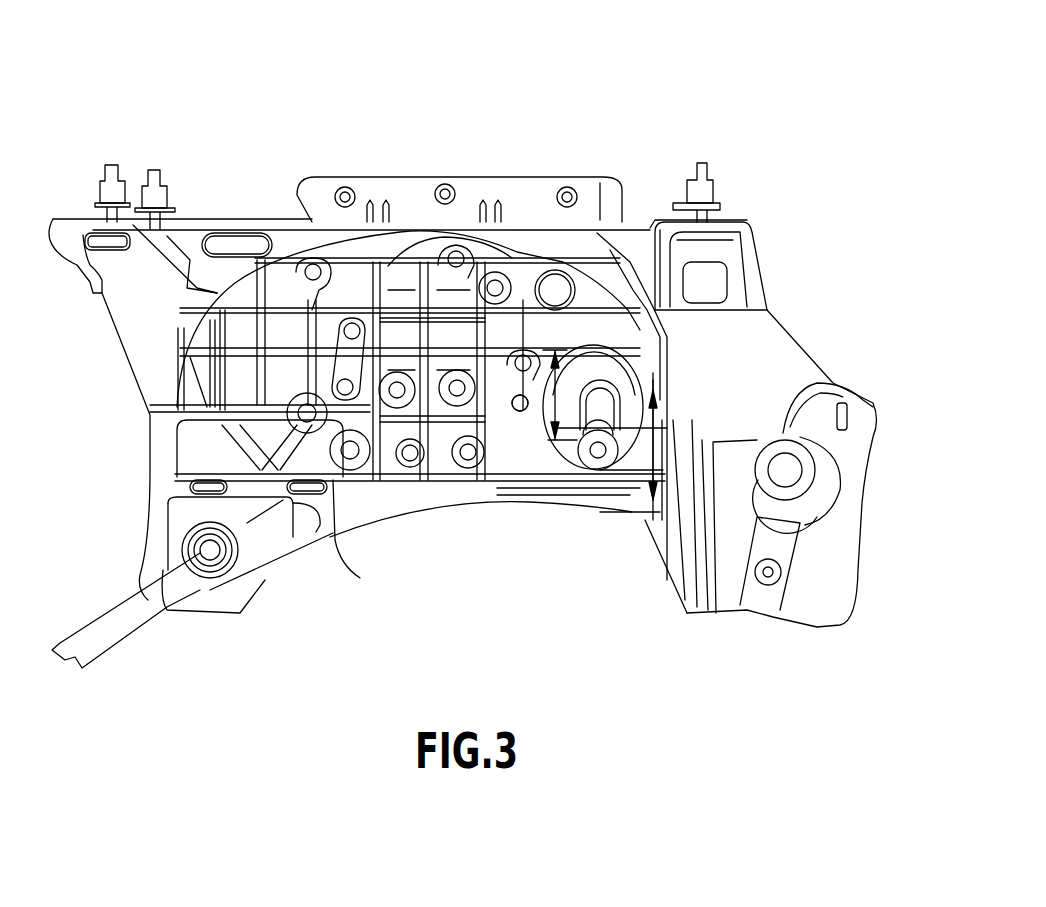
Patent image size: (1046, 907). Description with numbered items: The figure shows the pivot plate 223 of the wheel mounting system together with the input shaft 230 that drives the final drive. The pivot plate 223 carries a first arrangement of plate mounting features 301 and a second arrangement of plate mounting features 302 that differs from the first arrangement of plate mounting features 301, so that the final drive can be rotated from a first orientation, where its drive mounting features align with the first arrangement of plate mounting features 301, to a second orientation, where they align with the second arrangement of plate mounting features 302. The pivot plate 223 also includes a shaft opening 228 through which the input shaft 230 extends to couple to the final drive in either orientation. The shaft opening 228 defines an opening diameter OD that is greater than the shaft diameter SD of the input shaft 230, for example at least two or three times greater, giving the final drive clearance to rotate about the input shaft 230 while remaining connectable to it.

The pivot plate 223 is at (596, 142).
The shaft opening 228 is at (595, 350).
The input shaft 230 is at (613, 403).
The first arrangement of plate mounting features 301 is at (445, 185).
The second arrangement of plate mounting features 302 is at (345, 188).
The shaft diameter SD is at (655, 447).
The opening diameter OD is at (530, 420).